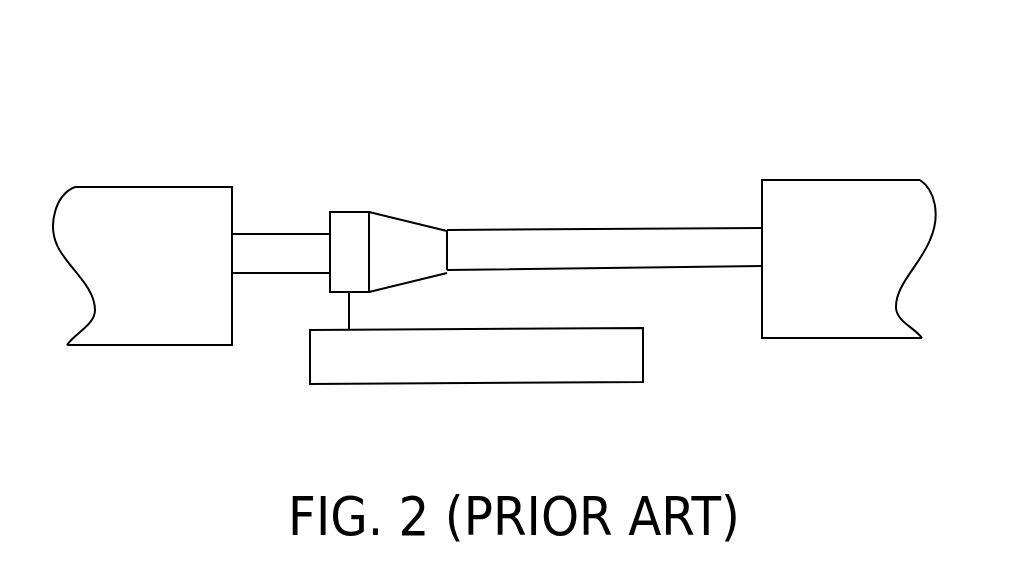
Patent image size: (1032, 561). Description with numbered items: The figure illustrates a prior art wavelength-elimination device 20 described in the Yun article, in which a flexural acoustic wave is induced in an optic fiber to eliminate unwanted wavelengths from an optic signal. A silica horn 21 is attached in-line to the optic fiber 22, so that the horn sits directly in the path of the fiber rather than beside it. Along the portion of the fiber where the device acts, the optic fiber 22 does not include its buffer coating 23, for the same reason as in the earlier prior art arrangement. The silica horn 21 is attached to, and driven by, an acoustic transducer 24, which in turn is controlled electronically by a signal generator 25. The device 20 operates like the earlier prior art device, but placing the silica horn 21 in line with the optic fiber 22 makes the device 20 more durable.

The device 20 is at (660, 102).
The silica horn 21 is at (408, 232).
The optic fiber 22 is at (506, 230).
The buffer coating 23 is at (148, 187).
The acoustic transducer 24 is at (349, 212).
The signal generator 25 is at (369, 384).